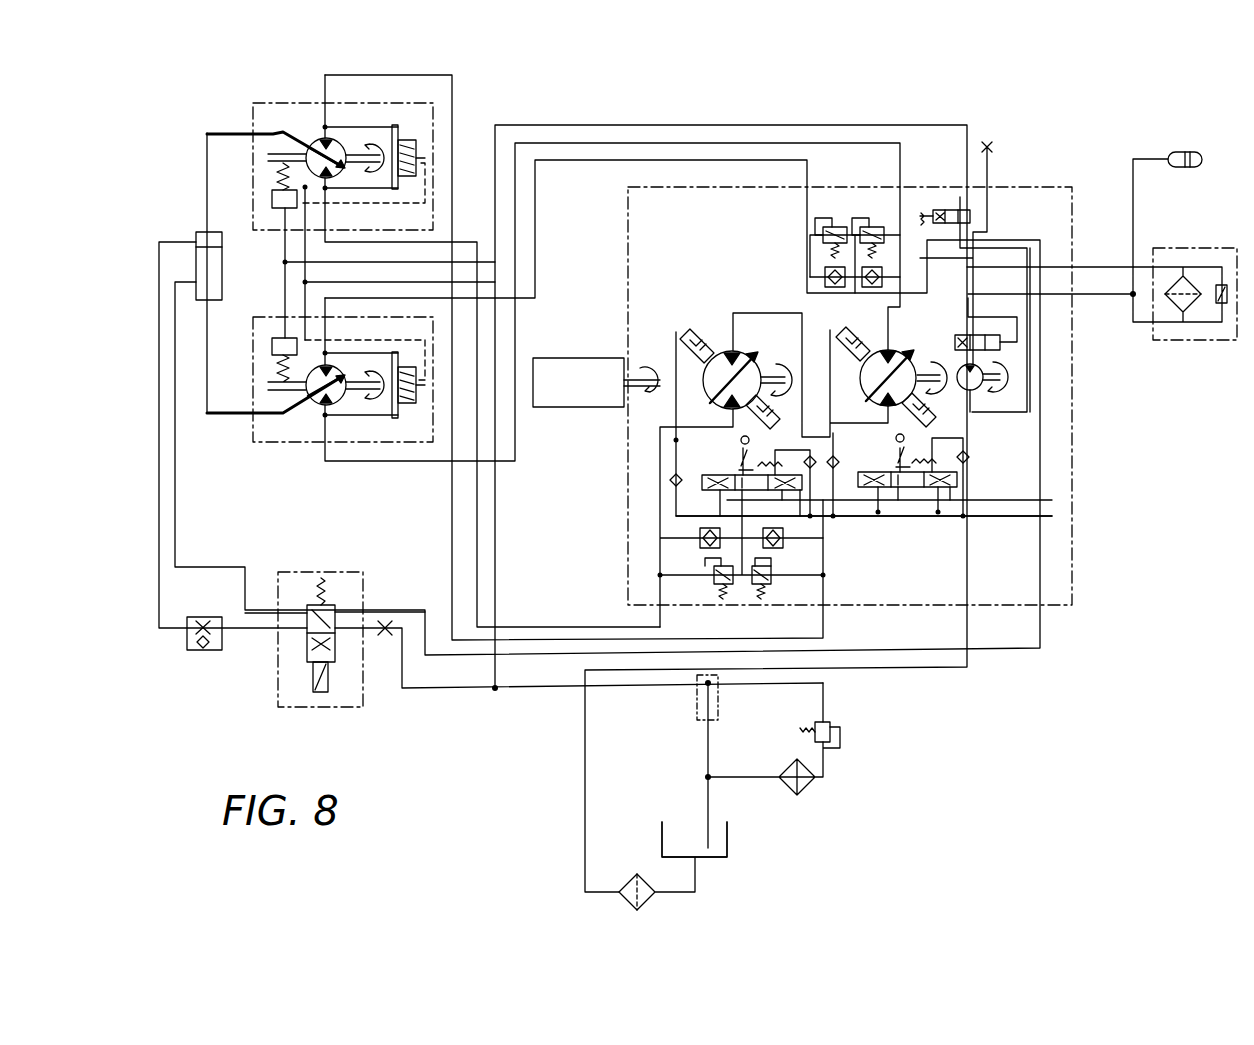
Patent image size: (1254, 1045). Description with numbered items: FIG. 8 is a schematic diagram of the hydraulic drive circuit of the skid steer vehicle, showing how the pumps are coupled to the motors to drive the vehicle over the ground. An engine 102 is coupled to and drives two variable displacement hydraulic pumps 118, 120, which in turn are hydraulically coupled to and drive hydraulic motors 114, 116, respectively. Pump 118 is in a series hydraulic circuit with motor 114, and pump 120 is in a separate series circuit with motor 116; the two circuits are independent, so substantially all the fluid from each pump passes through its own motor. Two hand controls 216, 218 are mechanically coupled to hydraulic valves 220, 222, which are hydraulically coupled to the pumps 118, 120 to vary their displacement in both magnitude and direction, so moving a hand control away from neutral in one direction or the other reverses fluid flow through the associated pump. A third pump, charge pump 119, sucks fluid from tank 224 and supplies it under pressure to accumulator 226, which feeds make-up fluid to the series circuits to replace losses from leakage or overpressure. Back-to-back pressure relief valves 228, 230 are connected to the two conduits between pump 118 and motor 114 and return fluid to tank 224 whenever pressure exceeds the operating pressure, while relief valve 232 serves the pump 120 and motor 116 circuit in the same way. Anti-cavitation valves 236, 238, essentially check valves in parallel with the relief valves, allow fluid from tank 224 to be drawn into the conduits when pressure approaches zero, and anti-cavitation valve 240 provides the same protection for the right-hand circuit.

The engine 102 is at (582, 394).
The hydraulic motor 114 is at (316, 144).
The hydraulic motor 116 is at (317, 398).
The hydraulic pump 118 is at (728, 351).
The charge pump 119 is at (983, 390).
The hydraulic pump 120 is at (896, 352).
The hand control 216 is at (738, 460).
The hand control 218 is at (853, 483).
The hydraulic valve 220 is at (704, 500).
The hydraulic valve 222 is at (910, 518).
The tank 224 is at (743, 830).
The accumulator 226 is at (1170, 152).
The pressure relief valve 228 is at (716, 586).
The pressure relief valve 230 is at (762, 588).
The pressure relief valve 232 is at (873, 226).
The anti-cavitation valve 236 is at (782, 546).
The anti-cavitation valve 238 is at (812, 262).
The anti-cavitation valve 240 is at (880, 270).